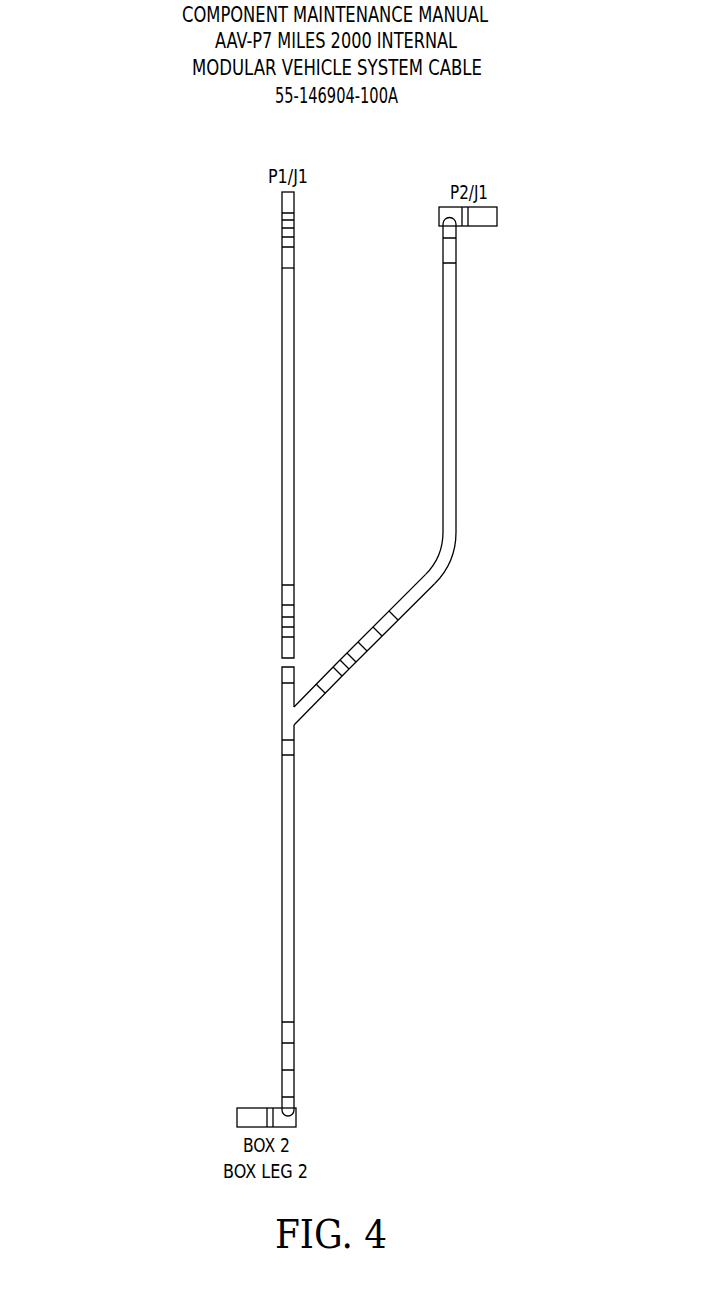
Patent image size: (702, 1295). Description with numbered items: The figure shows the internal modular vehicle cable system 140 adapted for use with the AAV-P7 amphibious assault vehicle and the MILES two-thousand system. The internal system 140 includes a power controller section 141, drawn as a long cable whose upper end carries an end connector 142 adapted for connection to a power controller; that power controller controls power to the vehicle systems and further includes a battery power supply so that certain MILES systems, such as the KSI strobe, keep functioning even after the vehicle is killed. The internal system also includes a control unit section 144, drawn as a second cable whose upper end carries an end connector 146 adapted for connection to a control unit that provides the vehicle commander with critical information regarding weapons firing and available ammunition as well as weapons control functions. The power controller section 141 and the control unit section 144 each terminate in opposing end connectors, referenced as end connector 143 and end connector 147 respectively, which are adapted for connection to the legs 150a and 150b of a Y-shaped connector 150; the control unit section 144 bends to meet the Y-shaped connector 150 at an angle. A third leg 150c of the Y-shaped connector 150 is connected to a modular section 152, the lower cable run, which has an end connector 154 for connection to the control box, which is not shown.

The internal system 140 is at (101, 219).
The power controller section 141 is at (281, 378).
The end connector 142 is at (281, 206).
The opposing end connector 143 is at (281, 645).
The control unit section 144 is at (457, 373).
The end connector 146 is at (497, 210).
The opposing end connector 147 is at (350, 673).
The Y-shaped connector 150 is at (281, 715).
The leg 150a is at (281, 678).
The leg 150b is at (327, 698).
The third leg 150c is at (281, 750).
The modular section 152 is at (295, 1003).
The end connector 154 is at (236, 1118).